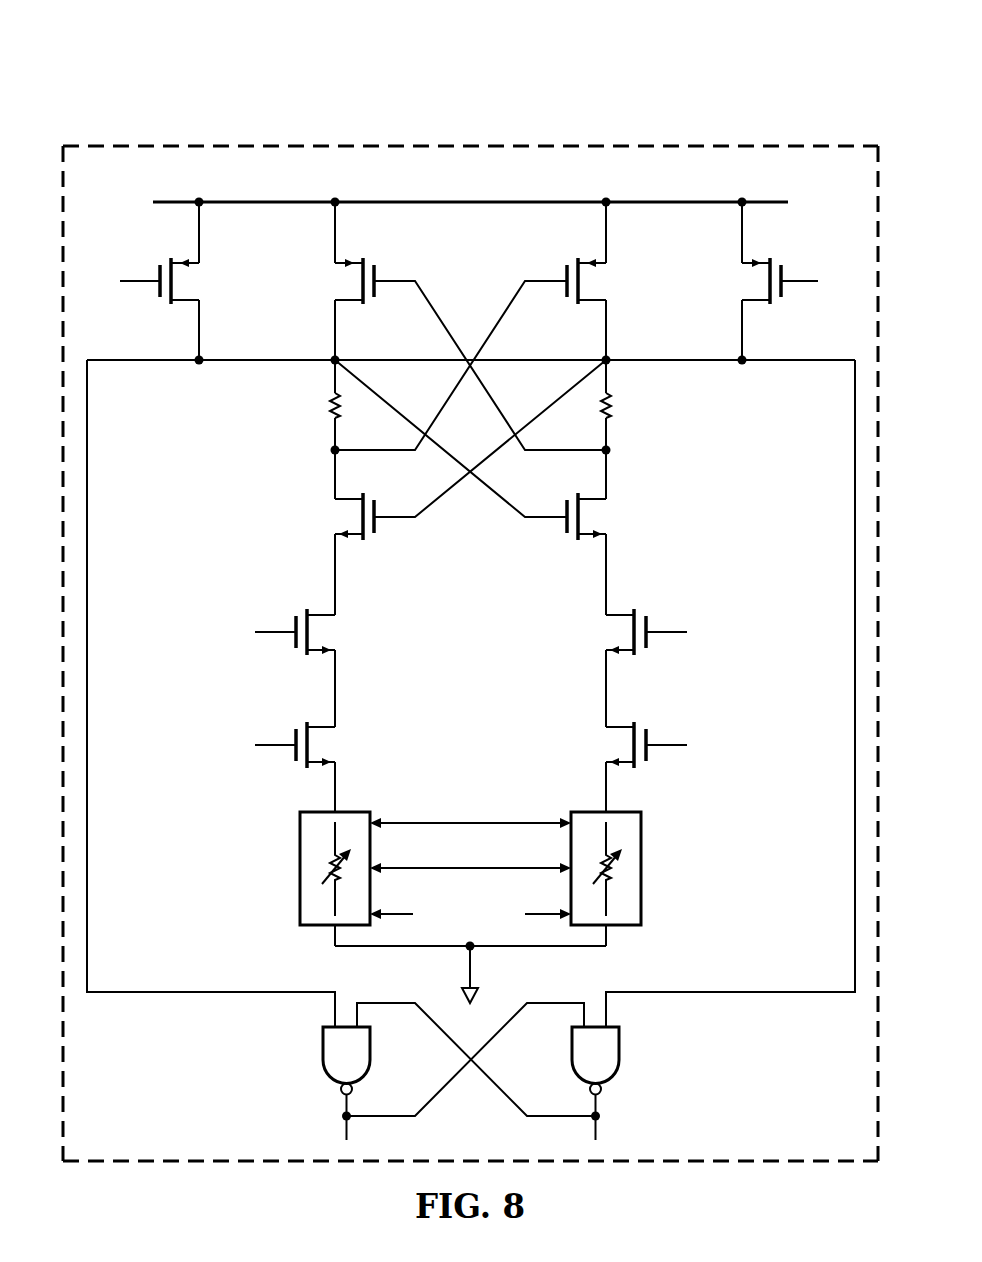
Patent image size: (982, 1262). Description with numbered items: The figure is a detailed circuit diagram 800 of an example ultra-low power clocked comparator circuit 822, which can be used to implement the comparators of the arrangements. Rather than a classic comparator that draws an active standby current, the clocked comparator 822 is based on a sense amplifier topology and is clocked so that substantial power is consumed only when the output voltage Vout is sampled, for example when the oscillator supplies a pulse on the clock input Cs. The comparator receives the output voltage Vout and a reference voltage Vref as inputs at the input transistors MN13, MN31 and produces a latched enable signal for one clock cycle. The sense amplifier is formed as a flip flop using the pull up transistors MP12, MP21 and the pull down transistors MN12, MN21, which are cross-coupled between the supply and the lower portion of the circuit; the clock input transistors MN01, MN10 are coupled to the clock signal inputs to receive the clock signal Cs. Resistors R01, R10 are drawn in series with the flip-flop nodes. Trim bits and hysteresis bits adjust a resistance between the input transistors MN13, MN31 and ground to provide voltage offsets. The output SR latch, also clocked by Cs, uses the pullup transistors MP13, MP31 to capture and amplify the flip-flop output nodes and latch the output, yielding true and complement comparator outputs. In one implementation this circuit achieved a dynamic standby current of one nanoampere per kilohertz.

The detailed circuit diagram 800 is at (360, 68).
The clocked comparator circuit 822 is at (610, 139).
The pullup transistor MP13 is at (204, 281).
The pull up transistor MP12 is at (330, 281).
The pull up transistor MP21 is at (611, 281).
The pullup transistor MP31 is at (738, 281).
The resistor R01 is at (313, 405).
The resistor R10 is at (628, 405).
The pull down transistor MN12 is at (329, 516).
The pull down transistor MN21 is at (611, 516).
The clock input transistor MN01 is at (339, 632).
The clock input transistor MN10 is at (601, 632).
The input transistor MN13 is at (340, 745).
The input transistor MN31 is at (601, 745).